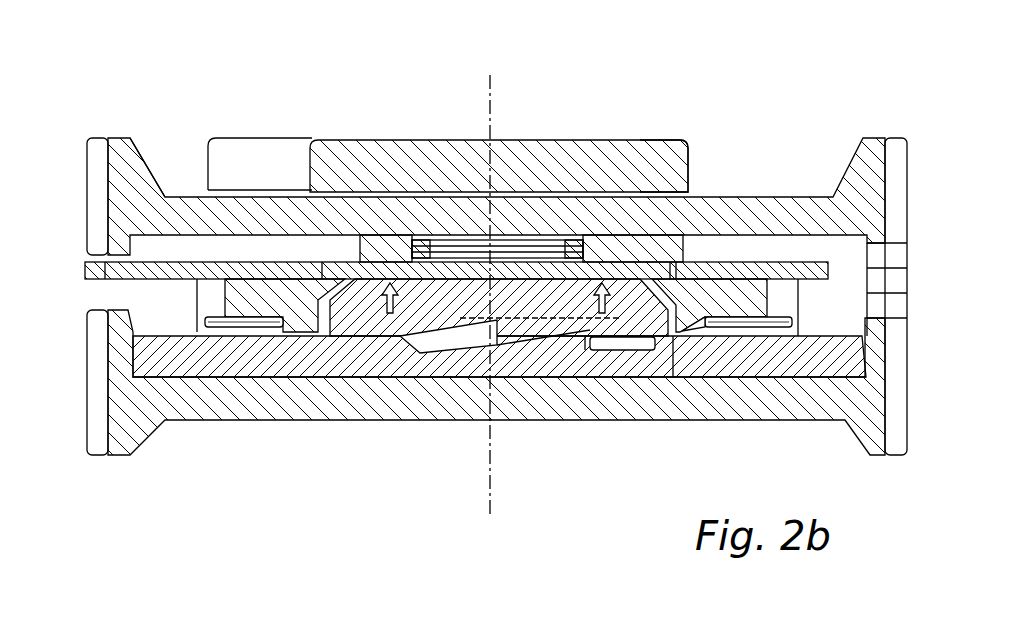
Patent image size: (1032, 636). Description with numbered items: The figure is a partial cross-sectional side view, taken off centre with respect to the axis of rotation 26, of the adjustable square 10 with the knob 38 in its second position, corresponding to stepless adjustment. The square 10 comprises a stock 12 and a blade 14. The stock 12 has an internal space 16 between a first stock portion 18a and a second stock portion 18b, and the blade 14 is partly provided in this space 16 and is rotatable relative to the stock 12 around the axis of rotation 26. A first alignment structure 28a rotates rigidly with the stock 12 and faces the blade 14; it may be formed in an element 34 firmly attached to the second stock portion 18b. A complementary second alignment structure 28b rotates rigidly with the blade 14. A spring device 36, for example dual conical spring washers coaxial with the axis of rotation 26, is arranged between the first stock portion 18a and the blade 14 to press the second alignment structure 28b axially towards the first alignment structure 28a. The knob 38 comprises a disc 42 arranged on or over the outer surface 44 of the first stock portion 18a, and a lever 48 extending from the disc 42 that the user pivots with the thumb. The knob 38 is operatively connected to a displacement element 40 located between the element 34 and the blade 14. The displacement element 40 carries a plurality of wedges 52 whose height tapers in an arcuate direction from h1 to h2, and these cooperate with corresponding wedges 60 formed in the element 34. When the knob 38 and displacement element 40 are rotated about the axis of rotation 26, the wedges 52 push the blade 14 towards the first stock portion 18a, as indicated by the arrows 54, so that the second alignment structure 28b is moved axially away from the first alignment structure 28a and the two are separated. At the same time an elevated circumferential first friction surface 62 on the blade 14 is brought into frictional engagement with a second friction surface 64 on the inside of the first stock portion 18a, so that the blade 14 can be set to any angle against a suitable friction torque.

The adjustable square 10 is at (790, 68).
The stock 12 is at (80, 135).
The blade 14 is at (85, 271).
The space 16 is at (166, 309).
The first stock portion 18a is at (92, 205).
The second stock portion 18b is at (87, 425).
The axis of rotation 26 is at (490, 500).
The first alignment structure 28a is at (238, 327).
The second alignment structure 28b is at (262, 322).
The element 34 is at (405, 365).
The spring device 36 is at (545, 255).
The knob 38 is at (316, 124).
The displacement element 40 is at (438, 320).
The disc 42 is at (648, 152).
The outer surface 44 is at (180, 195).
The lever 48 is at (245, 160).
The wedges 52 is at (500, 348).
The arrows 54 is at (385, 285).
The corresponding wedges 60 is at (550, 350).
The first friction surface 62 is at (360, 245).
The second friction surface 64 is at (403, 240).
The wedge height h1 is at (505, 290).
The wedge height h2 is at (585, 285).